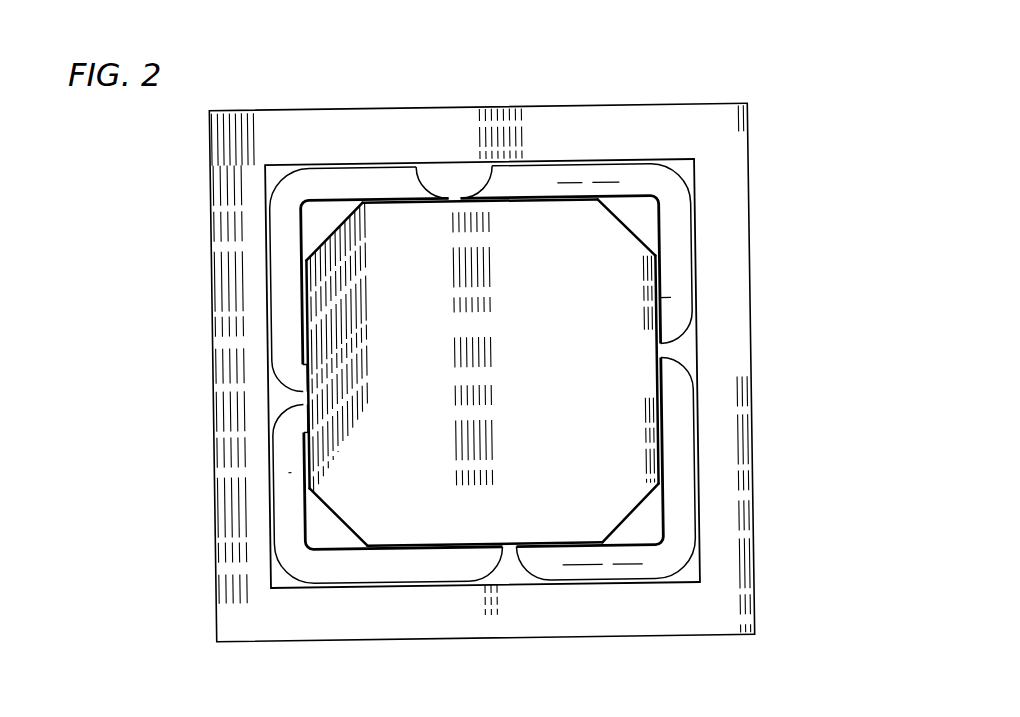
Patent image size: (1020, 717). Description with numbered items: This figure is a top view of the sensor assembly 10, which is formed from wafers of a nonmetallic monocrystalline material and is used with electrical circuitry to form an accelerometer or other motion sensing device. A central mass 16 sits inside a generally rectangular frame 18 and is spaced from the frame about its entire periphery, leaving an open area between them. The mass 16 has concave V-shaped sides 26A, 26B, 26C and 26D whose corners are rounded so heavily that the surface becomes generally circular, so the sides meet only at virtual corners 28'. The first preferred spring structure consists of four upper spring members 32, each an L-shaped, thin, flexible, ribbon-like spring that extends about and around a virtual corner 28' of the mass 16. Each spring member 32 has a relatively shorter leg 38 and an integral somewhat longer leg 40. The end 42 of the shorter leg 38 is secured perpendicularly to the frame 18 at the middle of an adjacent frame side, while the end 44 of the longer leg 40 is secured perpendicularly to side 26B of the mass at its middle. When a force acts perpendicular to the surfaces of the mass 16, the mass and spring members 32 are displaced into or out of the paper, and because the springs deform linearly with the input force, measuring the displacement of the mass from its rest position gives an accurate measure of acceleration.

The sensor assembly 10 is at (835, 178).
The central mass 16 is at (627, 473).
The frame 18 is at (737, 415).
The side 26A is at (657, 347).
The side 26B is at (444, 190).
The side 26C is at (309, 400).
The side 26D is at (512, 545).
The virtual corner 28' is at (437, 321).
The upper spring member 32 is at (682, 200).
The shorter leg 38 is at (690, 257).
The longer leg 40 is at (581, 177).
The end of leg 42 is at (697, 326).
The end of leg 44 is at (475, 200).